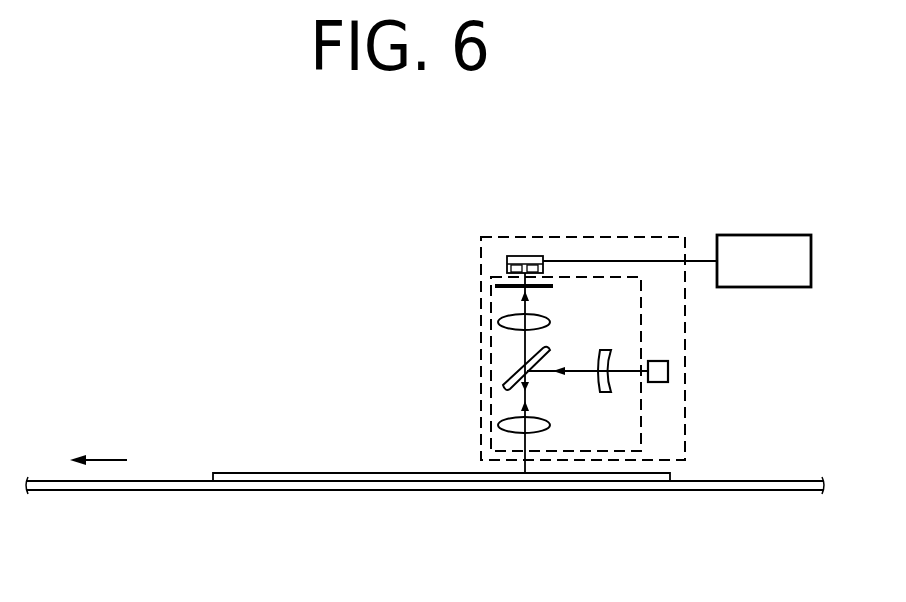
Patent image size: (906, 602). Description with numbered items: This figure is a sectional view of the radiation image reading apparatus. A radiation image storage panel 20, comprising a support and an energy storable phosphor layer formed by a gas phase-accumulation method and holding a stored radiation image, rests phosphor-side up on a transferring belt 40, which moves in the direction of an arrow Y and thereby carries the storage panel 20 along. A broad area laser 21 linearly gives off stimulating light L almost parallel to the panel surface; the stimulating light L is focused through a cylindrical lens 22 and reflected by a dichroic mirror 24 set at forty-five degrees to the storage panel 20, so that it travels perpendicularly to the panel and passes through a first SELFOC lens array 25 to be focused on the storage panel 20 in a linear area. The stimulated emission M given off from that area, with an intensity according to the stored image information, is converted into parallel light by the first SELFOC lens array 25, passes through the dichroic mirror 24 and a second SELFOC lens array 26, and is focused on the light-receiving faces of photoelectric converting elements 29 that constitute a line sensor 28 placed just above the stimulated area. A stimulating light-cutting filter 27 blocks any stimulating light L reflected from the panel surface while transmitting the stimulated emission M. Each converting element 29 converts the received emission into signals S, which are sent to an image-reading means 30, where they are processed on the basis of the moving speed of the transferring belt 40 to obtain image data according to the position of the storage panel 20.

The radiation image storage panel 20 is at (296, 472).
The broad area laser 21 is at (668, 370).
The cylindrical lens 22 is at (598, 350).
The dichroic mirror 24 is at (506, 387).
The first SELFOC lens array 25 is at (550, 420).
The second SELFOC lens array 26 is at (508, 325).
The stimulating light-cutting filter 27 is at (497, 289).
The line sensor 28 is at (506, 247).
The photoelectric converting elements 29 is at (507, 270).
The image-reading means 30 is at (765, 235).
The transferring belt 40 is at (768, 480).
The signals S is at (655, 260).
The stimulating light L is at (570, 370).
The stimulated emission M is at (515, 347).
The arrow Y is at (98, 446).